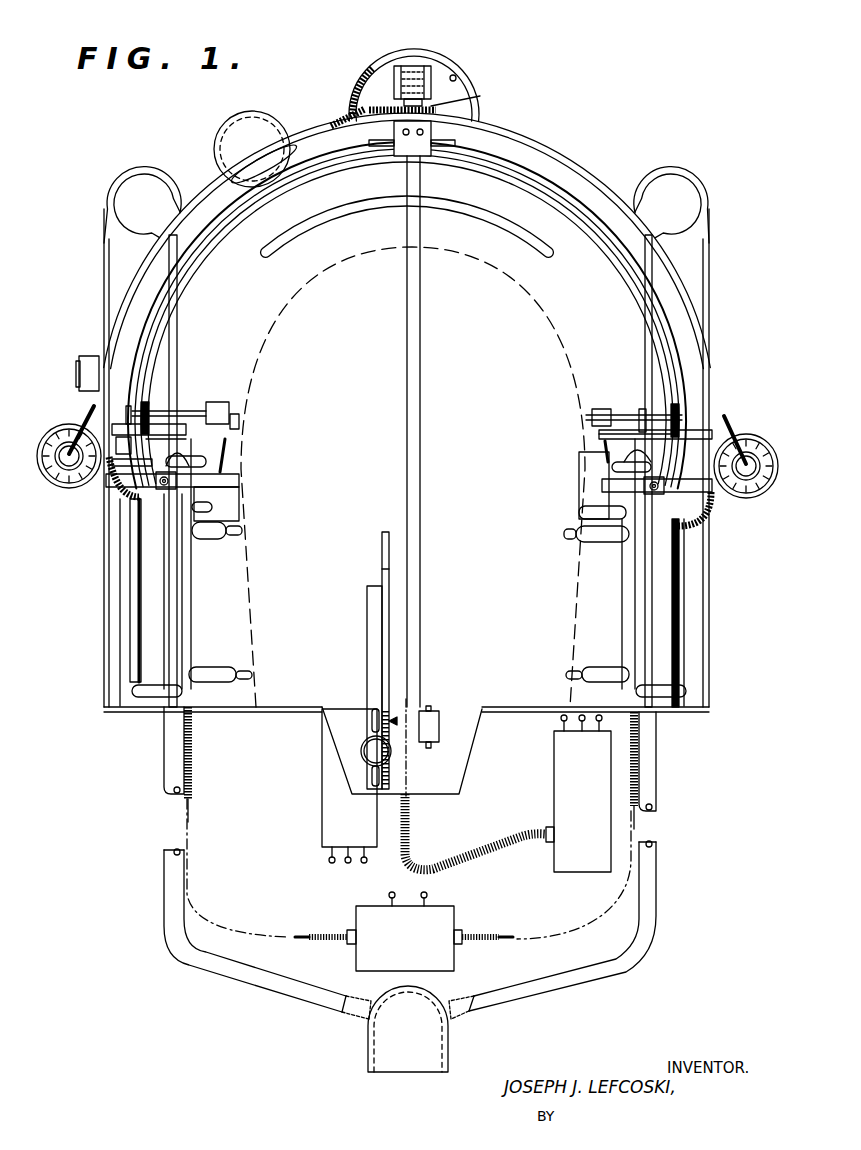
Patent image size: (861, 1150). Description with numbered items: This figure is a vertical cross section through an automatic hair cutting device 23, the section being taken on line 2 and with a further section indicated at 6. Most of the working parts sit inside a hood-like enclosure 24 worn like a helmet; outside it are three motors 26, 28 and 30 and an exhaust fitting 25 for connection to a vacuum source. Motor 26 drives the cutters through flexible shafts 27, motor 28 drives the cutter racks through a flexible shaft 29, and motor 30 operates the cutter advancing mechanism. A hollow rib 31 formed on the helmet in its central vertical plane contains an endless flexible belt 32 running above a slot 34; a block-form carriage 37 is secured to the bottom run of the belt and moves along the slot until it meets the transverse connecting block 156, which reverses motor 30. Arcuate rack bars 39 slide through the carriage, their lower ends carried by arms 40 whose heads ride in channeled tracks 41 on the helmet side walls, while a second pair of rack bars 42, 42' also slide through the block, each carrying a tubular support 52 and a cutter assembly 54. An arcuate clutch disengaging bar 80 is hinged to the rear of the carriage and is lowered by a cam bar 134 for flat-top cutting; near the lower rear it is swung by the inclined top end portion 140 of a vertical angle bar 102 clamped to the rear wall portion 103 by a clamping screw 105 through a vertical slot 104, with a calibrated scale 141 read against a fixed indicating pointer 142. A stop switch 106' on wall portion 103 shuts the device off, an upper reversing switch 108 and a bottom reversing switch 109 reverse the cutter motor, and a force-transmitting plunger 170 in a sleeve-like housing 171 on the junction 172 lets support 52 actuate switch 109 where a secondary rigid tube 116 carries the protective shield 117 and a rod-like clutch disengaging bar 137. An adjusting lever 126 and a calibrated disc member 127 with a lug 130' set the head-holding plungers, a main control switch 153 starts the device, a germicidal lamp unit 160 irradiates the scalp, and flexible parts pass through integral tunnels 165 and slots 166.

The section line 2- 2 is at (419, 6).
The section line 6- 6 is at (612, 398).
The automatic hair cutting device 23 is at (515, 63).
The hood-like enclosure 24 is at (589, 173).
The exhaust fitting 25 is at (439, 1054).
The motor 26 is at (443, 917).
The flexible shafts 27 is at (316, 937).
The motor 28 is at (568, 853).
The flexible shaft 29 is at (453, 851).
The motor 30 is at (313, 817).
The hollow rib 31 is at (446, 67).
The endless flexible belt 32 is at (410, 57).
The slot 34 is at (411, 448).
The carriage 37 is at (423, 159).
The arcuate rack bars 39 is at (209, 241).
The arms 40 is at (129, 458).
The channeled tracks 41 is at (123, 573).
The rack bar 42 is at (551, 212).
The rack bar 42' is at (236, 172).
The tubular support 52 is at (109, 414).
The cutter assembly 54 is at (217, 394).
The clutch disengaging bar 80 is at (432, 204).
The vertical angle bar 102 is at (369, 583).
The depending rear wall portion 103 is at (449, 772).
The vertical slot 104 is at (364, 713).
The clamping screw 105 is at (374, 744).
The stop switch 106' is at (454, 721).
The upper reversing switch 108 is at (331, 117).
The bottom reversing switch 109 is at (117, 446).
The secondary rigid tube 116 is at (184, 568).
The protective shield 117 is at (227, 493).
The adjusting lever 126 is at (83, 405).
The calibrated disc member 127 is at (39, 478).
The lug 130' is at (398, 444).
The cam bar 134 is at (374, 103).
The clutch disengaging bar 137 is at (217, 449).
The inclined top end portion 140 is at (376, 525).
The calibrated scale 141 is at (379, 769).
The fixed indicating pointer 142 is at (389, 713).
The main control switch 153 is at (68, 357).
The transverse connecting block 156 is at (473, 95).
The germicidal lamp unit 160 is at (261, 146).
The integral tunnels 165 is at (118, 170).
The slots 166 is at (169, 359).
The force-transmitting plunger 170 is at (136, 486).
The sleeve-like housing 171 is at (155, 453).
The junction 172 is at (231, 418).